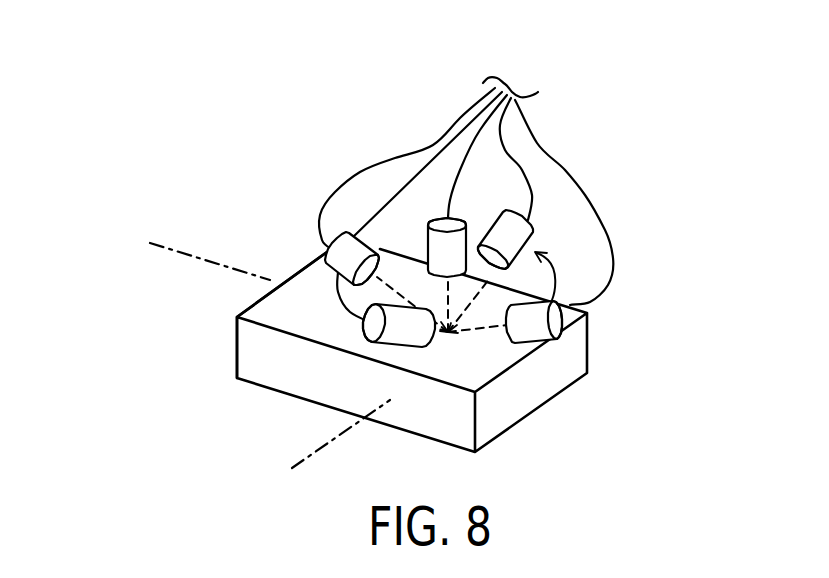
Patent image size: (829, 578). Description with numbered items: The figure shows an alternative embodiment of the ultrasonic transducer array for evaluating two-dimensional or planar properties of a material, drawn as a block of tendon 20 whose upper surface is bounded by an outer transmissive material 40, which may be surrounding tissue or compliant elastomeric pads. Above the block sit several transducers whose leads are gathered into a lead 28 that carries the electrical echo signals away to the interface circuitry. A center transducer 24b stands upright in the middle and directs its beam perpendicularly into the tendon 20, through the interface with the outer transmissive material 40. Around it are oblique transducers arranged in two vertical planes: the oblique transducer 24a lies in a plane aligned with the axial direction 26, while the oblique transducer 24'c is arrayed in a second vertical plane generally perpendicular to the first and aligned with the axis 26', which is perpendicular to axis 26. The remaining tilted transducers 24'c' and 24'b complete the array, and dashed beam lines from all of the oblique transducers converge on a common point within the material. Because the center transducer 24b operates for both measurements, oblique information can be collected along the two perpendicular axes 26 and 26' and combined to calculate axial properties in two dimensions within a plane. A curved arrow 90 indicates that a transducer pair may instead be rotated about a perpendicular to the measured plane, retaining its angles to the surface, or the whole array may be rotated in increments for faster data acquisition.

The tendon 20 is at (236, 344).
The outer transmissive material 40 is at (257, 309).
The axial direction 26 is at (192, 268).
The axis perpendicular to axis 26 26' is at (317, 434).
The lead 28 is at (427, 143).
The center transducer 24b is at (448, 225).
The camera 24'c' is at (318, 235).
The oblique transducer 24a is at (536, 238).
The oblique transducer 24'c is at (400, 394).
The camera 24'b is at (583, 336).
The arrow 90 is at (556, 276).